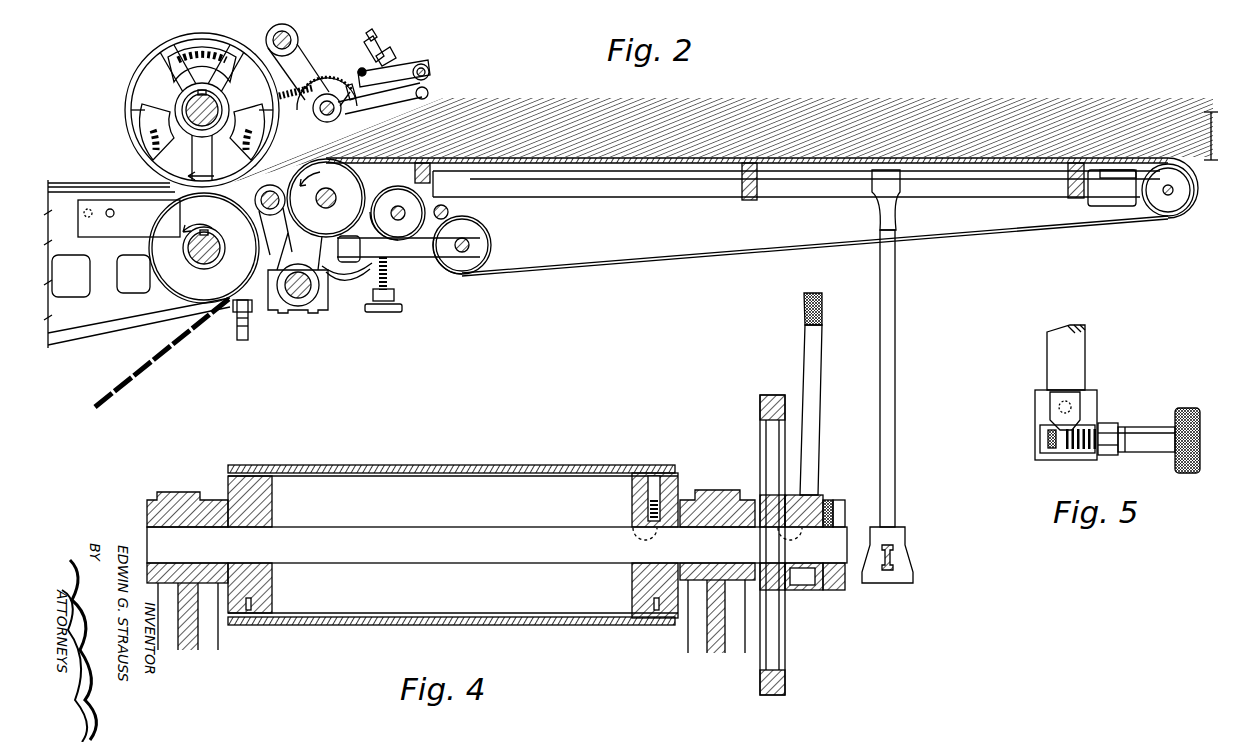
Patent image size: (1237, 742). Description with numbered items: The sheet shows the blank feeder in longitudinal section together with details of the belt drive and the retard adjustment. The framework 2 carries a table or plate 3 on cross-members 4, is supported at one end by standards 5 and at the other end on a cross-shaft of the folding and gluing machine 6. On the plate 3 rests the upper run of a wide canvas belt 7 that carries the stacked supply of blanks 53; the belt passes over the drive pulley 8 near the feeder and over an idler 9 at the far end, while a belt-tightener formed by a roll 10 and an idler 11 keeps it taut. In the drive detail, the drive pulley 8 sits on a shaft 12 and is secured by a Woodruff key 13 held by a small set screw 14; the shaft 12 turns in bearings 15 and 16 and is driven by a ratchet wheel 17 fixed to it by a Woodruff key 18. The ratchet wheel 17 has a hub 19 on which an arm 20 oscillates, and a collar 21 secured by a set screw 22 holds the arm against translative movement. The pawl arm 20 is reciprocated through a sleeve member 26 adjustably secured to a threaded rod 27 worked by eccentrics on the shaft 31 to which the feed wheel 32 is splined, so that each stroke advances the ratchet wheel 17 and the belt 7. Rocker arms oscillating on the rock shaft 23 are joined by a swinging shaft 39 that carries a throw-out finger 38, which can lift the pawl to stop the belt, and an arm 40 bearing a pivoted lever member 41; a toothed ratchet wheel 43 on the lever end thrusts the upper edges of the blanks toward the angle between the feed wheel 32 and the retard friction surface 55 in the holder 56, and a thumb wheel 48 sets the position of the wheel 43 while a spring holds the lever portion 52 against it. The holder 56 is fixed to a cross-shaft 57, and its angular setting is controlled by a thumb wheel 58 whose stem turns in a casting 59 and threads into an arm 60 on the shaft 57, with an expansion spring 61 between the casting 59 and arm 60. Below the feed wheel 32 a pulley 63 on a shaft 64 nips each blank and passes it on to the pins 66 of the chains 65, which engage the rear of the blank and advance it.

In FIG. 2, the framework 2 is at (626, 188).
In FIG. 2, the table or plate 3 is at (690, 173).
In FIG. 2, the cross-members 4 is at (432, 172).
In FIG. 2, the standards 5 is at (921, 378).
In FIG. 2, the folding and gluing machine 6 is at (83, 318).
In FIG. 2, the wide canvas belt 7 is at (632, 264).
In FIG. 4, the wide canvas belt 7 is at (440, 464).
In FIG. 2, the drive pulley 8 is at (358, 183).
In FIG. 4, the drive pulley 8 is at (362, 476).
In FIG. 2, the idler 9 is at (1168, 190).
In FIG. 2, the roll 10 is at (462, 245).
In FIG. 2, the idler 11 is at (399, 213).
In FIG. 2, the shaft 12 is at (320, 209).
In FIG. 4, the shaft 12 is at (406, 553).
In FIG. 4, the Woodruff key 13 is at (648, 530).
In FIG. 4, the set screw 14 is at (646, 512).
In FIG. 4, the bearing 15 is at (187, 571).
In FIG. 4, the bearing 16 is at (717, 571).
In FIG. 2, the ratchet wheel 17 is at (358, 268).
In FIG. 4, the ratchet wheel 17 is at (760, 404).
In FIG. 4, the Woodruff key 18 is at (786, 530).
In FIG. 4, the hub 19 is at (804, 590).
In FIG. 4, the arm 20 is at (812, 477).
In FIG. 4, the collar 21 is at (846, 520).
In FIG. 4, the set screw 22 is at (833, 502).
In FIG. 2, the rock shaft 23 is at (449, 212).
In FIG. 2, the sleeve member 26 is at (321, 78).
In FIG. 2, the threaded rod 27 is at (292, 92).
In FIG. 2, the shaft 31 is at (202, 110).
In FIG. 2, the feed wheel 32 is at (136, 83).
In FIG. 2, the throw-out finger 38 is at (380, 91).
In FIG. 2, the shaft 39 is at (431, 73).
In FIG. 2, the arm 40 is at (404, 66).
In FIG. 2, the lever member 41 is at (336, 86).
In FIG. 2, the ratchet wheel 43 is at (312, 110).
In FIG. 2, the thumb wheel 48 is at (369, 36).
In FIG. 2, the portion of lever 52 is at (386, 52).
In FIG. 2, the stacked supply of blanks 53 is at (517, 103).
In FIG. 2, the retard friction surface 55 is at (256, 232).
In FIG. 2, the holder 56 is at (277, 247).
In FIG. 2, the cross-shaft 57 is at (272, 212).
In FIG. 5, the cross-shaft 57 is at (1074, 366).
In FIG. 5, the thumb wheel 58 is at (1186, 408).
In FIG. 5, the casting 59 is at (1108, 424).
In FIG. 5, the arm 60 is at (1050, 402).
In FIG. 5, the expansion spring 61 is at (1090, 452).
In FIG. 2, the pulley 63 is at (165, 250).
In FIG. 2, the shaft 64 is at (214, 252).
In FIG. 2, the chains 65 is at (141, 367).
In FIG. 2, the pins 66 is at (183, 340).